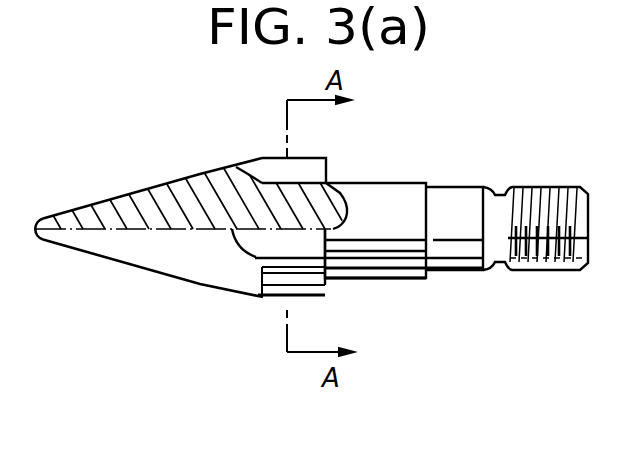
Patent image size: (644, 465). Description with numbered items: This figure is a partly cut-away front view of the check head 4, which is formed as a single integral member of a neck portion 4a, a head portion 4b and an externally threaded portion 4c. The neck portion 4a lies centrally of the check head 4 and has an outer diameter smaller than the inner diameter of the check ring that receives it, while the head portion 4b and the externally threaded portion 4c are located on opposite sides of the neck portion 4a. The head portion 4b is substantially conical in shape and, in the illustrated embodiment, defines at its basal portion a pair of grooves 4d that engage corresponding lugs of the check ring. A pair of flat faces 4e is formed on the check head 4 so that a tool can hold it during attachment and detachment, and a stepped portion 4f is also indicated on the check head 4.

The check head 4 is at (428, 182).
The neck portion 4a is at (403, 273).
The head portion 4b is at (148, 266).
The externally threaded portion 4c is at (551, 270).
The grooves 4d is at (317, 172).
The flat faces 4e is at (260, 250).
The stepped portion 4f is at (325, 285).